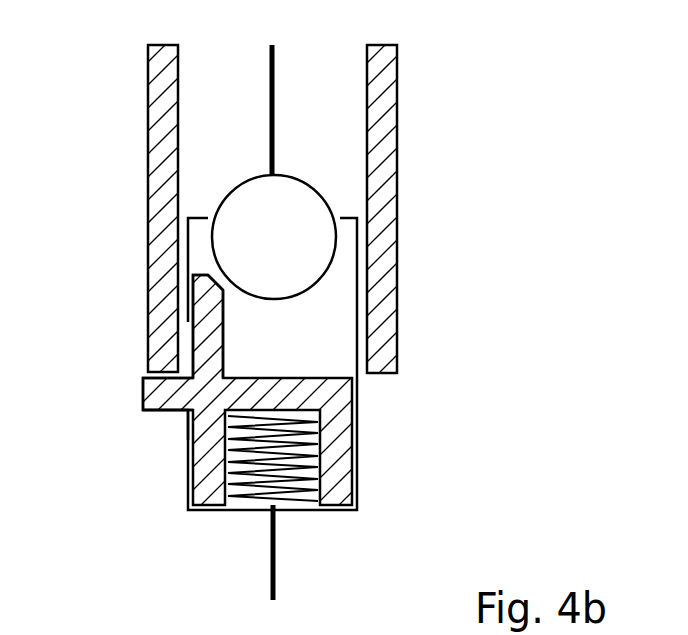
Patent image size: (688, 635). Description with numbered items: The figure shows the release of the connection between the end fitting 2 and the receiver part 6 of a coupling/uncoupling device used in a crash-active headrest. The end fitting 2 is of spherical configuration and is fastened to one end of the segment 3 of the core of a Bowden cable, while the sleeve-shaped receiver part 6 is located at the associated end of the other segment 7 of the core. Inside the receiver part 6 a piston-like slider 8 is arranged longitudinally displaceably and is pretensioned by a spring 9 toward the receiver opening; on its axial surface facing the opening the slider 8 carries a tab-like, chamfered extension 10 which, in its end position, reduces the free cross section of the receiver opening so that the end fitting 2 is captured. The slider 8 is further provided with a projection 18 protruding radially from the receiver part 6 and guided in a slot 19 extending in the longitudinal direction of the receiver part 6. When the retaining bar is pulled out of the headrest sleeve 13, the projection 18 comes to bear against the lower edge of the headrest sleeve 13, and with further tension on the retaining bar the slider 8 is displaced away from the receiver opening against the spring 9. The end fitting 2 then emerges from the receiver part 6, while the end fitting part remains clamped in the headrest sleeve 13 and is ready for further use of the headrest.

The end fitting 2 is at (288, 255).
The segment 3 is at (277, 112).
The receiver part 6 is at (357, 377).
The segment 7 is at (278, 558).
The slider 8 is at (340, 427).
The spring 9 is at (290, 463).
The extension 10 is at (200, 340).
The headrest sleeve 13 is at (157, 183).
The projection 18 is at (167, 393).
The slot 19 is at (180, 417).